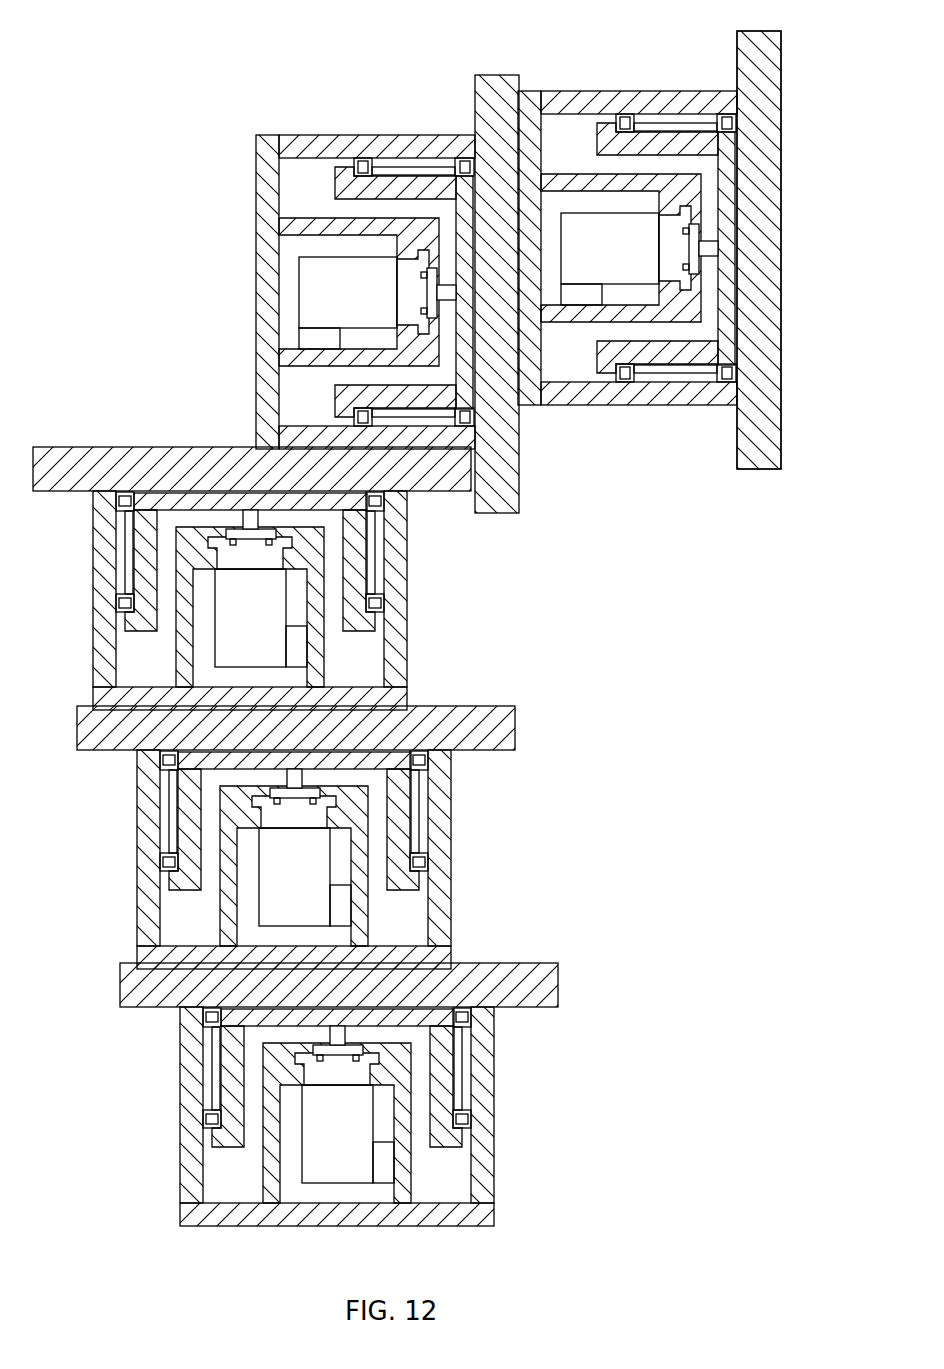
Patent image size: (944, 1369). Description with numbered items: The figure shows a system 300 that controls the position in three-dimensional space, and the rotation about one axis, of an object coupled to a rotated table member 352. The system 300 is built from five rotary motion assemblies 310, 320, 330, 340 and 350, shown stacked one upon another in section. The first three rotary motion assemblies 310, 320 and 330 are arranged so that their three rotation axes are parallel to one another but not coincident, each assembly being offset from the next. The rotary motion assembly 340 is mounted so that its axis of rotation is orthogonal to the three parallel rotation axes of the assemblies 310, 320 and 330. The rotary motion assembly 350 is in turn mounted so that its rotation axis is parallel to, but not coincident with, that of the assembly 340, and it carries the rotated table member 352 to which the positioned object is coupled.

The system 300 is at (446, 622).
The rotary motion assembly 310 is at (531, 1118).
The rotary motion assembly 320 is at (516, 862).
The rotary motion assembly 330 is at (447, 615).
The rotary motion assembly 340 is at (318, 97).
The rotary motion assembly 350 is at (581, 70).
The rotated table member 352 is at (781, 265).